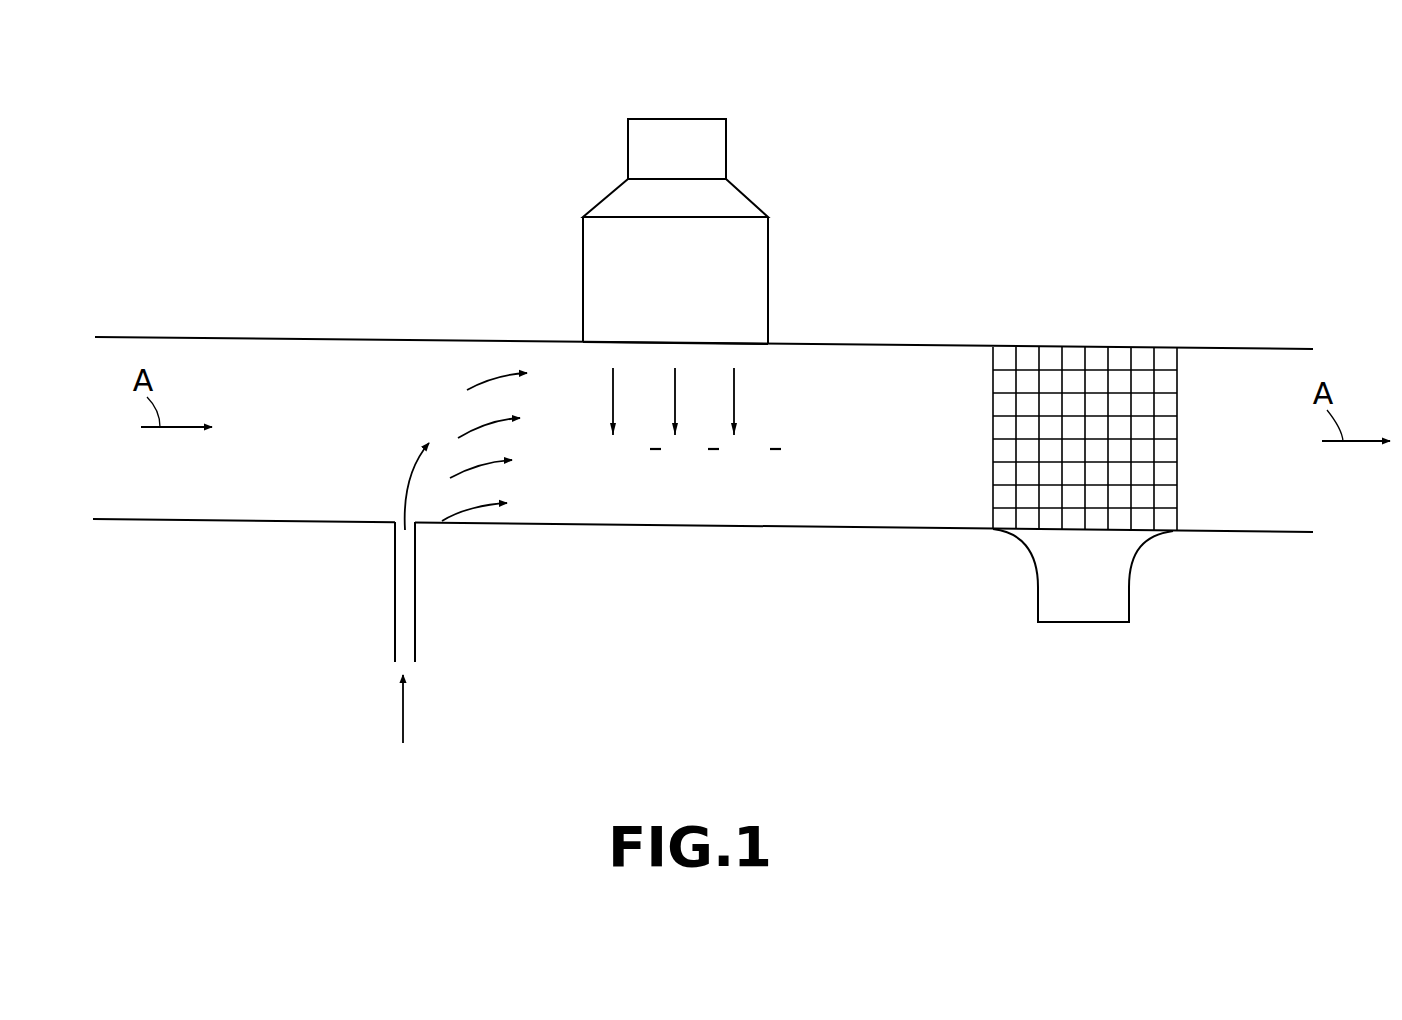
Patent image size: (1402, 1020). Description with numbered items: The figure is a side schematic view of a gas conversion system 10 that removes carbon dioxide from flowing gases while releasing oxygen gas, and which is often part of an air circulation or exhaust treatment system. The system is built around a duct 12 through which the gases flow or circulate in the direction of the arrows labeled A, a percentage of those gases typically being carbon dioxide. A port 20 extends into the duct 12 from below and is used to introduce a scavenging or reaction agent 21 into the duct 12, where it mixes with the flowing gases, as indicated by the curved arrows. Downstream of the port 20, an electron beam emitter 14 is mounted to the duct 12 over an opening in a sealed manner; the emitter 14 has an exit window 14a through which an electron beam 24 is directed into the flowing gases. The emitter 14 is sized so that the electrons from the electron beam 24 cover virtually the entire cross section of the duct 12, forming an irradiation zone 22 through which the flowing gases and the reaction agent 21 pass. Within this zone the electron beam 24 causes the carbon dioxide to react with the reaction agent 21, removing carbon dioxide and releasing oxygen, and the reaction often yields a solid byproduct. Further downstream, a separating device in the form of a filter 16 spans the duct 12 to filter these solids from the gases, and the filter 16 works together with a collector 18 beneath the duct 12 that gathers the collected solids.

The gas conversion system 10 is at (1047, 173).
The duct 12 is at (368, 338).
The electron beam emitter 14 is at (657, 128).
The exit window 14a is at (622, 340).
The filter 16 is at (1073, 400).
The collector 18 is at (1113, 580).
The port 20 is at (405, 613).
The reaction agent 21 is at (480, 385).
The irradiation zone 22 is at (683, 493).
The electron beam 24 is at (737, 388).